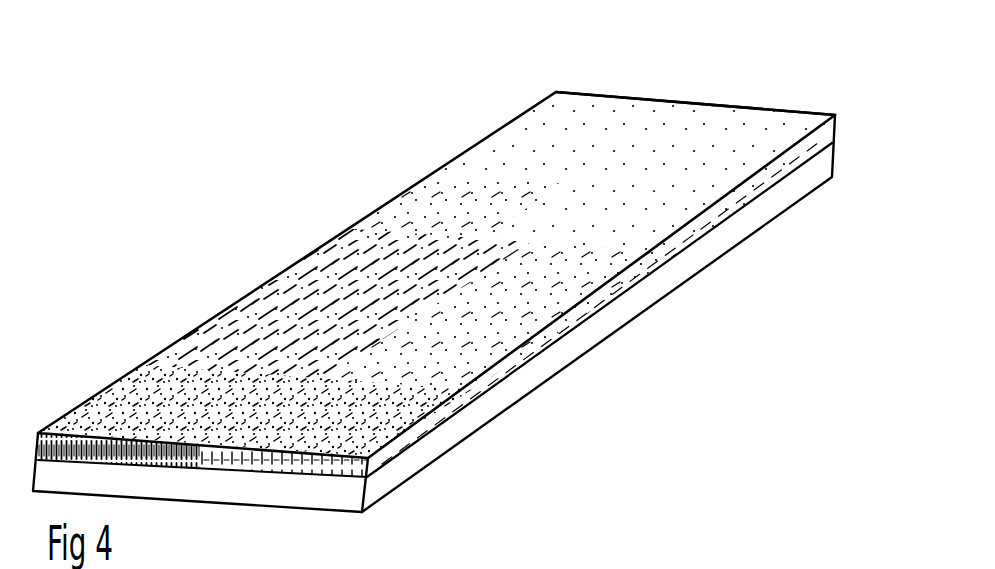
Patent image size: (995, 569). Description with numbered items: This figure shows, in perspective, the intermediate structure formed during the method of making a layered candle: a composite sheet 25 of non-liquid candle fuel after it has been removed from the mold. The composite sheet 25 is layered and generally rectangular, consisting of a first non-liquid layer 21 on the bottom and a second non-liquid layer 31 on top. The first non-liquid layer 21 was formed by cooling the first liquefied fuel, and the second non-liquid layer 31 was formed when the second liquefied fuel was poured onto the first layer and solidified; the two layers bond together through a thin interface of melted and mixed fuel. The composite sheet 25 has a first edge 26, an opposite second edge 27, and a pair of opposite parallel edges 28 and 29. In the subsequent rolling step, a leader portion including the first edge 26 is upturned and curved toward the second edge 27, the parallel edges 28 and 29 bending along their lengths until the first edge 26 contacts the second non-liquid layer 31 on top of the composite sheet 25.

The composite sheet 25 is at (126, 354).
The first non-liquid layer 21 is at (603, 327).
The first edge 26 is at (698, 103).
The second edge 27 is at (59, 428).
The parallel edge 28 is at (217, 312).
The parallel edge 29 is at (748, 180).
The second non-liquid layer 31 is at (683, 240).